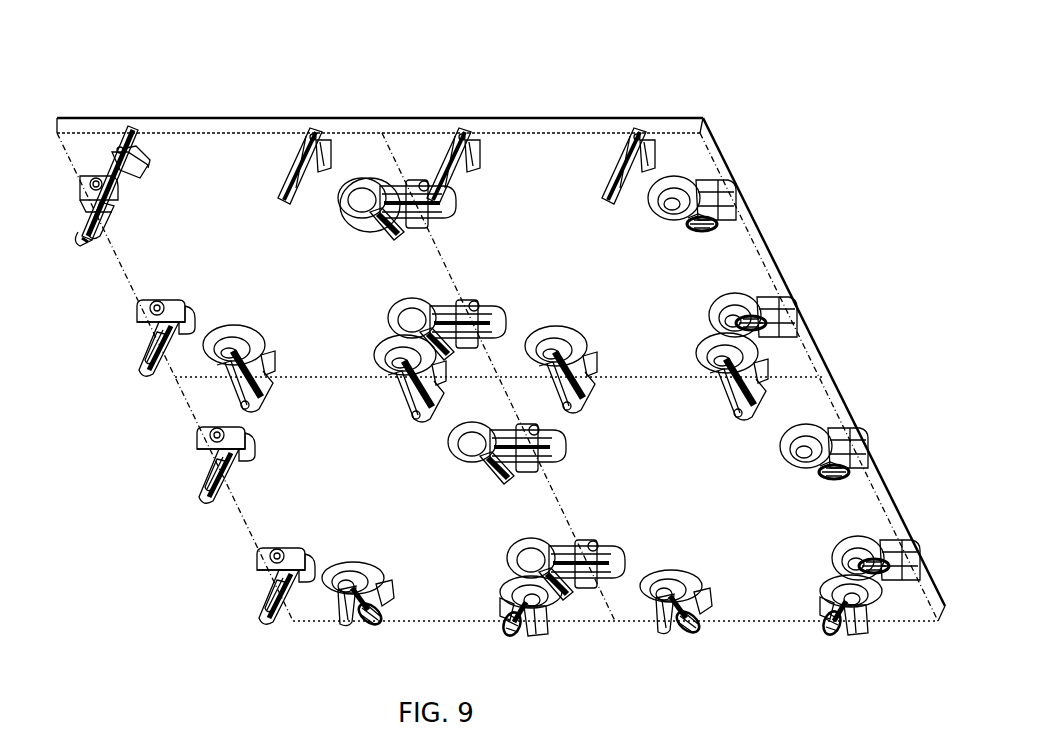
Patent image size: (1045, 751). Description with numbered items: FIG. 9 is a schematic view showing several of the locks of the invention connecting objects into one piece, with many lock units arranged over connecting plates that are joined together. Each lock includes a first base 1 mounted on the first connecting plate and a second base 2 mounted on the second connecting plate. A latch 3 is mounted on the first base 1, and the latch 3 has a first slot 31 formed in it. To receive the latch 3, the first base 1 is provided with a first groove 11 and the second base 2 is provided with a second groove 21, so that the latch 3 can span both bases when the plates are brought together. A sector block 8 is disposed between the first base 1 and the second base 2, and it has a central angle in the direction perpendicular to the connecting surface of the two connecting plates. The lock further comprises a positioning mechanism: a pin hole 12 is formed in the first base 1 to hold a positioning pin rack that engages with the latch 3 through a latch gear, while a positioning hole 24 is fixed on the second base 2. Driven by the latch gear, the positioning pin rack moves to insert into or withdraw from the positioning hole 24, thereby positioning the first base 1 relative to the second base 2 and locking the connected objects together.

The first base 1 is at (466, 131).
The second base 2 is at (561, 149).
The latch 3 is at (82, 212).
The sector block 8 is at (398, 183).
The first groove 11 is at (128, 128).
The pin hole 12 is at (440, 130).
The second groove 21 is at (540, 630).
The positioning hole 24 is at (706, 192).
The first slot 31 is at (80, 237).